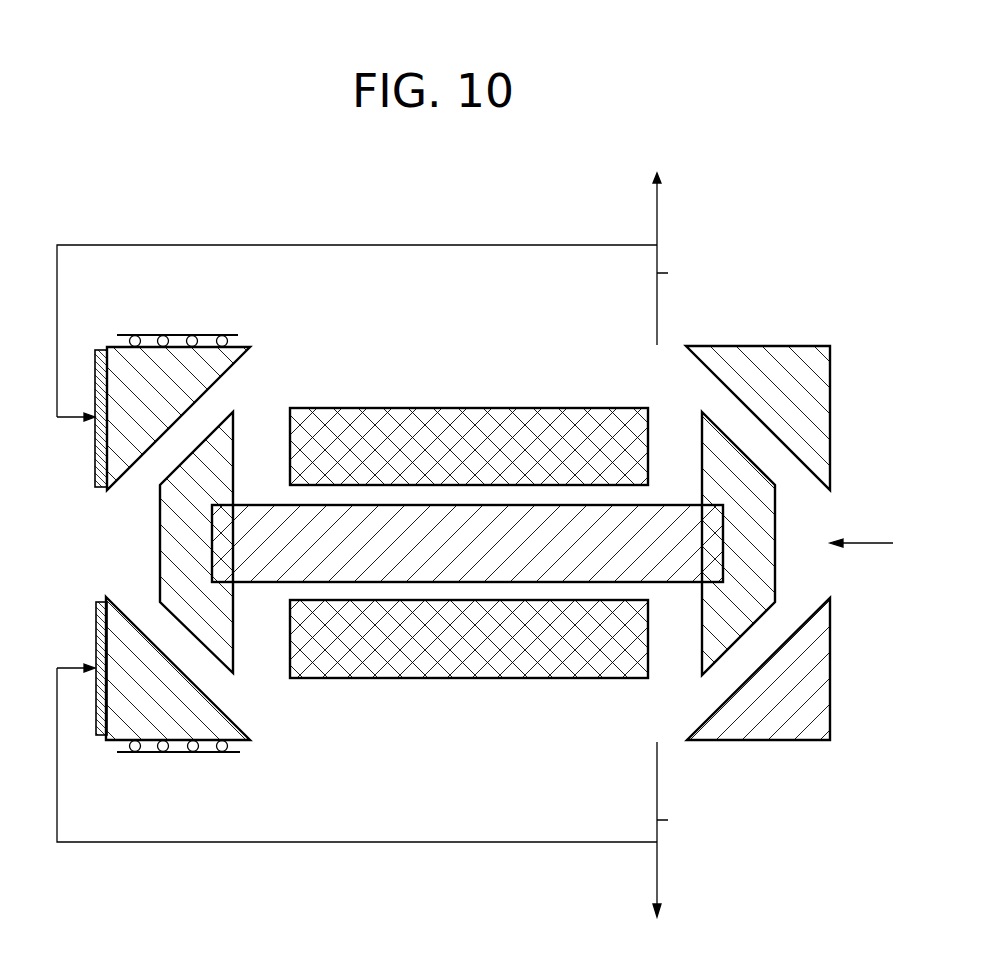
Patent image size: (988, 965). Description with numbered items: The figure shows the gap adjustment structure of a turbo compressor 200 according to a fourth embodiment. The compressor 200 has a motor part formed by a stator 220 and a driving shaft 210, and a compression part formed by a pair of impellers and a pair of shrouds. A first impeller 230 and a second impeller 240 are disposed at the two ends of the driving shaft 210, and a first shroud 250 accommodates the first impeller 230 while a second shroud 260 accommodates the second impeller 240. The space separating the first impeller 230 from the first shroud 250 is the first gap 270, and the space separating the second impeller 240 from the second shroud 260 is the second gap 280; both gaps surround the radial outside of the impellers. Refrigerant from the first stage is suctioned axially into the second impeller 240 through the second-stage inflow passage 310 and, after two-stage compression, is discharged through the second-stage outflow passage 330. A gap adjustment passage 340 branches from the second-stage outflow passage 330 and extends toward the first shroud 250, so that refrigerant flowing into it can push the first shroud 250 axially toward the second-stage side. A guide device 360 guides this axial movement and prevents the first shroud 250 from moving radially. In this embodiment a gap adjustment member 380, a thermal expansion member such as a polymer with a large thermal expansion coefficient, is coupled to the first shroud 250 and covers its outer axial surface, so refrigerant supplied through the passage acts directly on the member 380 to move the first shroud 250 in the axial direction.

The compressor 200 is at (106, 157).
The driving shaft 210 is at (260, 517).
The stator 220 is at (460, 430).
The first impeller 230 is at (170, 537).
The second impeller 240 is at (760, 570).
The first shroud 250 is at (118, 365).
The second shroud 260 is at (775, 370).
The first gap 270 is at (190, 656).
The second gap 280 is at (746, 656).
The second-stage inflow passage 310 is at (870, 543).
The second-stage outflow passage 330 is at (668, 273).
The gap adjustment passage 340 is at (320, 245).
The guide device 360 is at (177, 332).
The gap adjustment member 380 is at (108, 450).